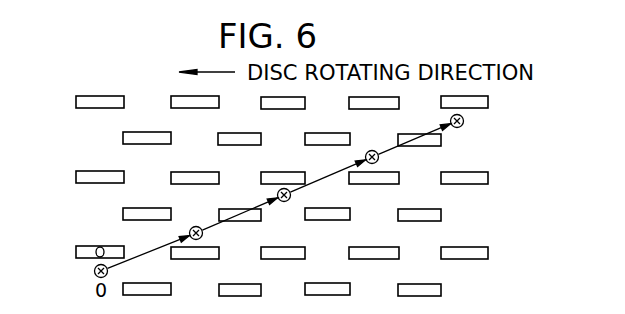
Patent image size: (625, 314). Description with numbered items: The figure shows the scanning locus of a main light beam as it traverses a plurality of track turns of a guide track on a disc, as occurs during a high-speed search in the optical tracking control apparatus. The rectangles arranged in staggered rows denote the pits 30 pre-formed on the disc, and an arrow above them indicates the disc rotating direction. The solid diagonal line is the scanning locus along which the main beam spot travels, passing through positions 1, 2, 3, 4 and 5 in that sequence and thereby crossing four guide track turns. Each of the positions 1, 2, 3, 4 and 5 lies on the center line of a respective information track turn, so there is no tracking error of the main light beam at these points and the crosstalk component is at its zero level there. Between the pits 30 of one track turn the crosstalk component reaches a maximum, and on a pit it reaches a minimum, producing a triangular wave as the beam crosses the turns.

The pits 30 is at (132, 132).
The position 1 is at (94, 270).
The position 2 is at (189, 229).
The position 3 is at (277, 191).
The position 4 is at (365, 153).
The position 5 is at (450, 117).